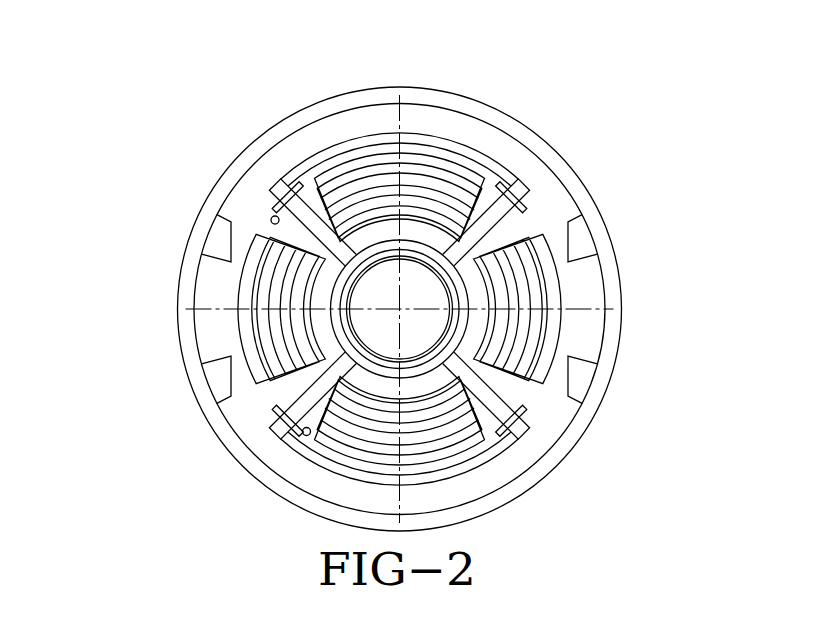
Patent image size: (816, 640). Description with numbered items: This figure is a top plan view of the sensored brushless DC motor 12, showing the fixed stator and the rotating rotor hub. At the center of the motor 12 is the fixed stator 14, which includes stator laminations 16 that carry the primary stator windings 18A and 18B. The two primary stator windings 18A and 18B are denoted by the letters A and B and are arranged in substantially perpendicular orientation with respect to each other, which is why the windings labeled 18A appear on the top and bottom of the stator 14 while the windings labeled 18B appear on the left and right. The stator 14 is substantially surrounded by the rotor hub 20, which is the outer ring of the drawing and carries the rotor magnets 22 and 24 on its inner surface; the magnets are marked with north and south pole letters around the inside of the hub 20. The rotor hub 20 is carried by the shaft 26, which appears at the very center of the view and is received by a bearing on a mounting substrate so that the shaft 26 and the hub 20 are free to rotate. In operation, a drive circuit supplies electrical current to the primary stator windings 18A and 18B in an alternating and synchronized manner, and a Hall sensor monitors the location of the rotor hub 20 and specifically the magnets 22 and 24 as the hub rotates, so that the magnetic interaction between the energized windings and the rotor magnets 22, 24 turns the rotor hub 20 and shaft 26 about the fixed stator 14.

The sensored brushless DC motor 12 is at (133, 115).
The fixed stator 14 is at (463, 250).
The stator laminations 16 is at (553, 297).
The primary stator winding 18A is at (362, 192).
The primary stator winding 18B is at (277, 276).
The rotor hub 20 is at (185, 347).
The rotor magnet 22 is at (248, 430).
The rotor magnet 24 is at (278, 167).
The shaft 26 is at (417, 280).